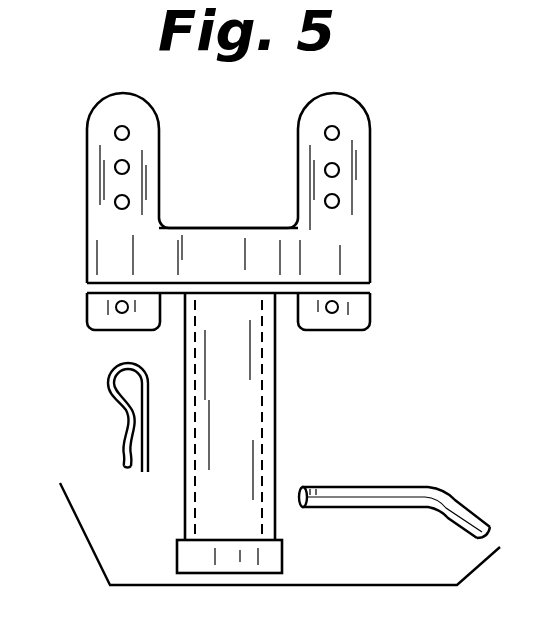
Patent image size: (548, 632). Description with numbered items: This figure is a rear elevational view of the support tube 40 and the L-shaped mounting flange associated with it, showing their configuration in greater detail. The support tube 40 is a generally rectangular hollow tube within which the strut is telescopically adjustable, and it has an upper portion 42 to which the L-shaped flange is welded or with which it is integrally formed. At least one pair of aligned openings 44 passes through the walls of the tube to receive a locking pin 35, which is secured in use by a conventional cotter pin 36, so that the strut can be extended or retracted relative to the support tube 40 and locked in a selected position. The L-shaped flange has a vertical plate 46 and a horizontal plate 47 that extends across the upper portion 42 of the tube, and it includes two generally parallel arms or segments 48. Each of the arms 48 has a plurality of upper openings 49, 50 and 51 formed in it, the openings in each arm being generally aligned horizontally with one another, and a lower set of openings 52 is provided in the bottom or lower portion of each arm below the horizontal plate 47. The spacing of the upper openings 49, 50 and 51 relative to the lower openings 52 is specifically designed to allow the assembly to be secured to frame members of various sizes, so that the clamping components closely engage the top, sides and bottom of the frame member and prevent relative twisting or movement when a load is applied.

The locking pin 35 is at (375, 486).
The cotter pin 36 is at (108, 385).
The support tube 40 is at (283, 455).
The upper portion 42 is at (276, 362).
The aligned openings 44 is at (195, 420).
The vertical plate 46 is at (266, 198).
The horizontal plate 47 is at (344, 283).
The arms 48 is at (371, 180).
The upper opening 49 is at (130, 130).
The upper opening 50 is at (130, 164).
The upper opening 51 is at (130, 199).
The lower openings 52 is at (118, 311).